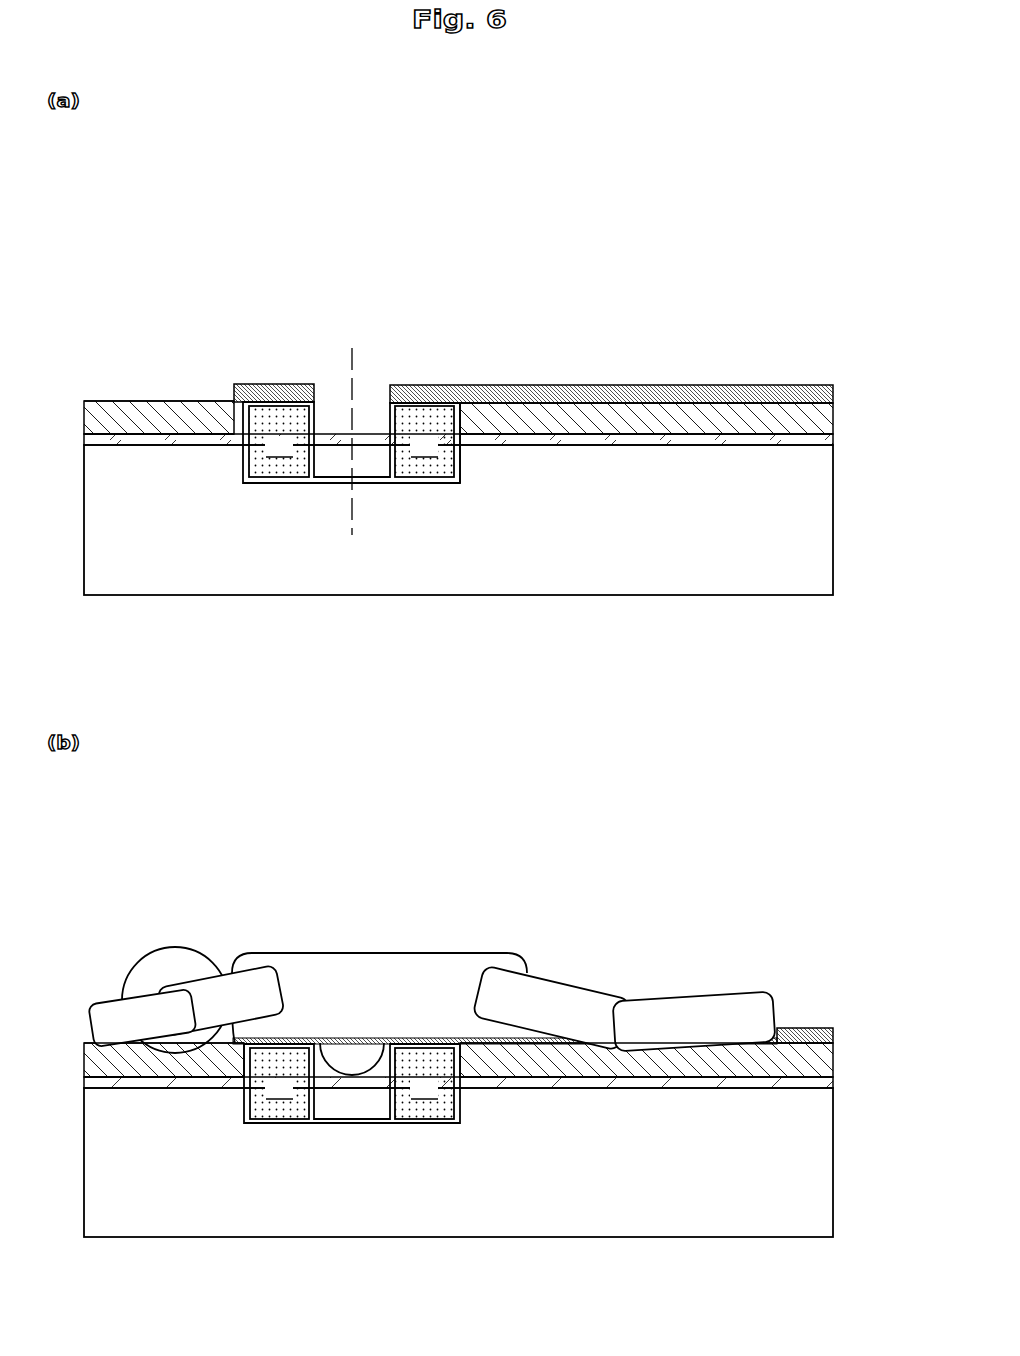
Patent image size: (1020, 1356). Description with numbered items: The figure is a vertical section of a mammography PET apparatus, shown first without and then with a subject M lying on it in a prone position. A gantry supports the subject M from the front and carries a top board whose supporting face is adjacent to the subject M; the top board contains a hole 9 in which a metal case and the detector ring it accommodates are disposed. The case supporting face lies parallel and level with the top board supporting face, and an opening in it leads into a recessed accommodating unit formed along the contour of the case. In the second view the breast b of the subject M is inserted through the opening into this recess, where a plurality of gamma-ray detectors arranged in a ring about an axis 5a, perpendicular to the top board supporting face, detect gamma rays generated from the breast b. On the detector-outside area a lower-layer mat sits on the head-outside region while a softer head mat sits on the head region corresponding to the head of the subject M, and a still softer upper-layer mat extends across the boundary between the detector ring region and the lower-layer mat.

The axis 5a is at (355, 520).
The hole 9 is at (465, 455).
The subject M is at (733, 998).
The breast b is at (331, 1050).